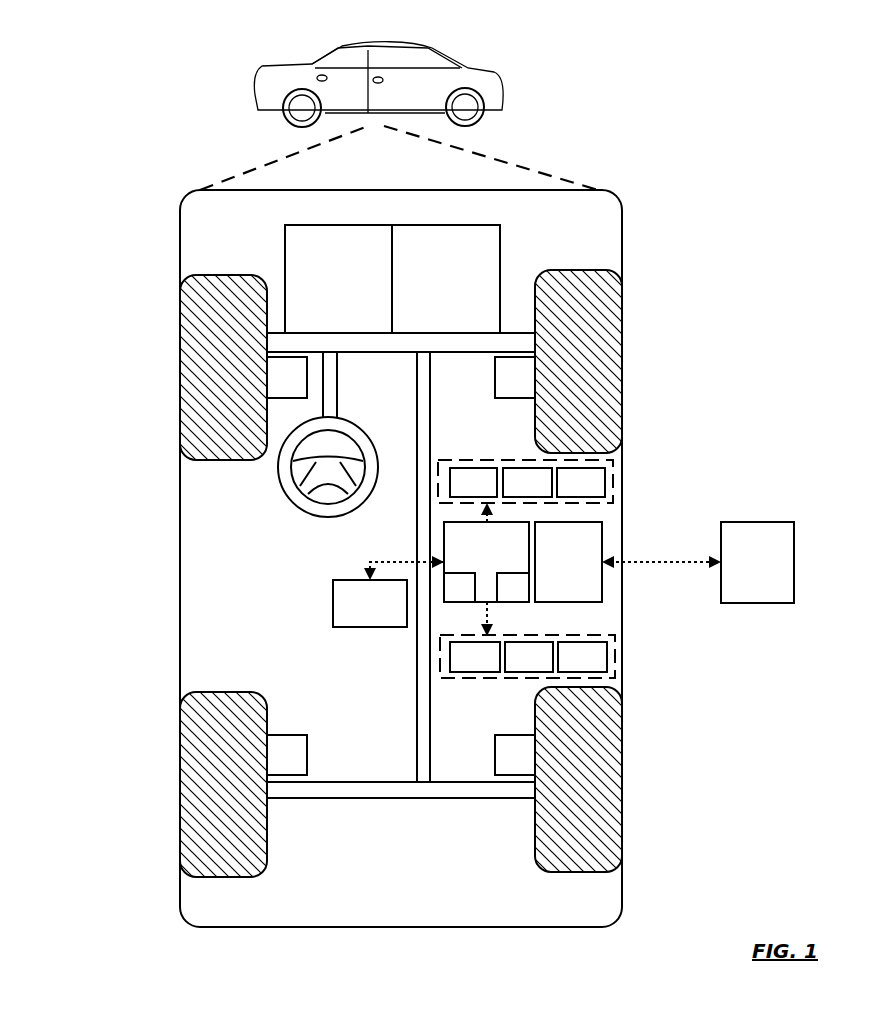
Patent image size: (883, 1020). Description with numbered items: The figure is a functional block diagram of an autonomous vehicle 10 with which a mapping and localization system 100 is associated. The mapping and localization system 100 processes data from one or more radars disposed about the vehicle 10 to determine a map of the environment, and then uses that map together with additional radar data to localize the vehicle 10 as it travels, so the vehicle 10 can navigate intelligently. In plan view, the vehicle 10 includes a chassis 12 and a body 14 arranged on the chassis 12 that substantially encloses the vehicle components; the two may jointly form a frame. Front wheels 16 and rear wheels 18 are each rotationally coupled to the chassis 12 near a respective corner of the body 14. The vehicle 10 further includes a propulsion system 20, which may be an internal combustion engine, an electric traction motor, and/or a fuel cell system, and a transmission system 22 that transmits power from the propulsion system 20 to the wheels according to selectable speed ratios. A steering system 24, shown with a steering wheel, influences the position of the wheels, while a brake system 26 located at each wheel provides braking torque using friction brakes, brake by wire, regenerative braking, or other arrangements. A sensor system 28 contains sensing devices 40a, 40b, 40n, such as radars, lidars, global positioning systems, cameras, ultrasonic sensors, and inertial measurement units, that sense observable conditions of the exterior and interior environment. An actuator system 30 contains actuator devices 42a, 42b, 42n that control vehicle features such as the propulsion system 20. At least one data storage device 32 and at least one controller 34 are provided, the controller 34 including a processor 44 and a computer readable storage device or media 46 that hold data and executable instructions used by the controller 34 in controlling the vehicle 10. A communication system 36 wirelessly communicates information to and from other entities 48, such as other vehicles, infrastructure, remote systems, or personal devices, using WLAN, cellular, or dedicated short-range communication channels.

The vehicle 10 is at (254, 98).
The mapping and localization system 100 is at (652, 200).
The chassis 12 is at (417, 718).
The body 14 is at (180, 546).
The front wheels 16 is at (222, 275).
The rear wheels 18 is at (240, 877).
The propulsion system 20 is at (338, 279).
The transmission system 22 is at (446, 279).
The steering system 24 is at (355, 371).
The brake system 26 is at (401, 566).
The sensor system 28 is at (478, 434).
The actuator system 30 is at (480, 678).
The data storage device 32 is at (370, 603).
The controller 34 is at (486, 562).
The communication system 36 is at (568, 562).
The sensing device 40a is at (473, 482).
The sensing device 40b is at (527, 482).
The sensing device 40n is at (581, 482).
The actuator device 42a is at (475, 657).
The actuator device 42b is at (529, 657).
The actuator device 42n is at (582, 657).
The processor 44 is at (459, 587).
The computer readable storage device or media 46 is at (513, 587).
The other entities 48 is at (757, 562).